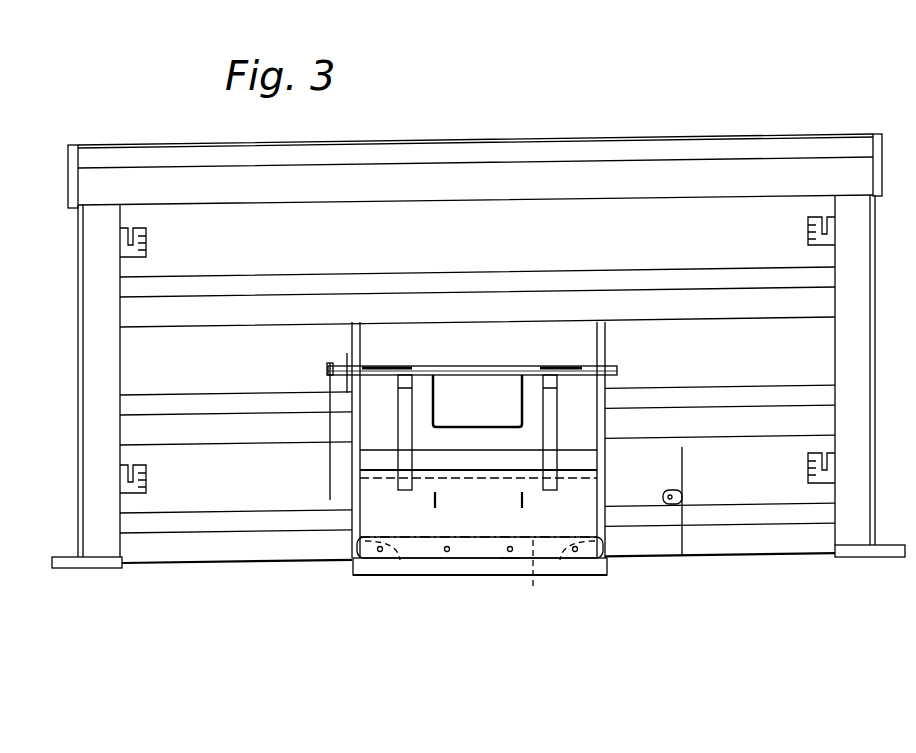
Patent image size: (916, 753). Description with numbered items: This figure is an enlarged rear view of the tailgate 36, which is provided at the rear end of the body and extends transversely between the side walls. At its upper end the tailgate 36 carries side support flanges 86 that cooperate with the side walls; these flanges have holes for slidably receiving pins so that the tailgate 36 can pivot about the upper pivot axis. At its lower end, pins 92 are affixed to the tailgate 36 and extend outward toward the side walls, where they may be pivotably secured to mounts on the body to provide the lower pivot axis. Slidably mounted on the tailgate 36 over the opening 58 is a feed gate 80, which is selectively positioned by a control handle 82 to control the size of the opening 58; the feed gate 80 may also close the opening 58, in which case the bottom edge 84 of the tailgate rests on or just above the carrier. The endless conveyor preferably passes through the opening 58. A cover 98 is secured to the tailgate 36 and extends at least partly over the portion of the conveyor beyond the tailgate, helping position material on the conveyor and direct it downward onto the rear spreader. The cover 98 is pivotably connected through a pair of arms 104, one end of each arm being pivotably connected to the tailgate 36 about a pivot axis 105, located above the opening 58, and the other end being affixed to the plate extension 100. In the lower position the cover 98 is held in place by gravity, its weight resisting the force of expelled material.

The tailgate 36 is at (495, 128).
The side support flanges 86 is at (73, 165).
The pins 92 is at (70, 562).
The control handle 82 is at (328, 465).
The pivot axis 105 is at (620, 372).
The arms 104 is at (403, 423).
The feed gate 80 is at (503, 457).
The opening 58 is at (400, 563).
The cover 98 is at (423, 565).
The plate extension 100 is at (510, 573).
The bottom edge 84 is at (533, 587).